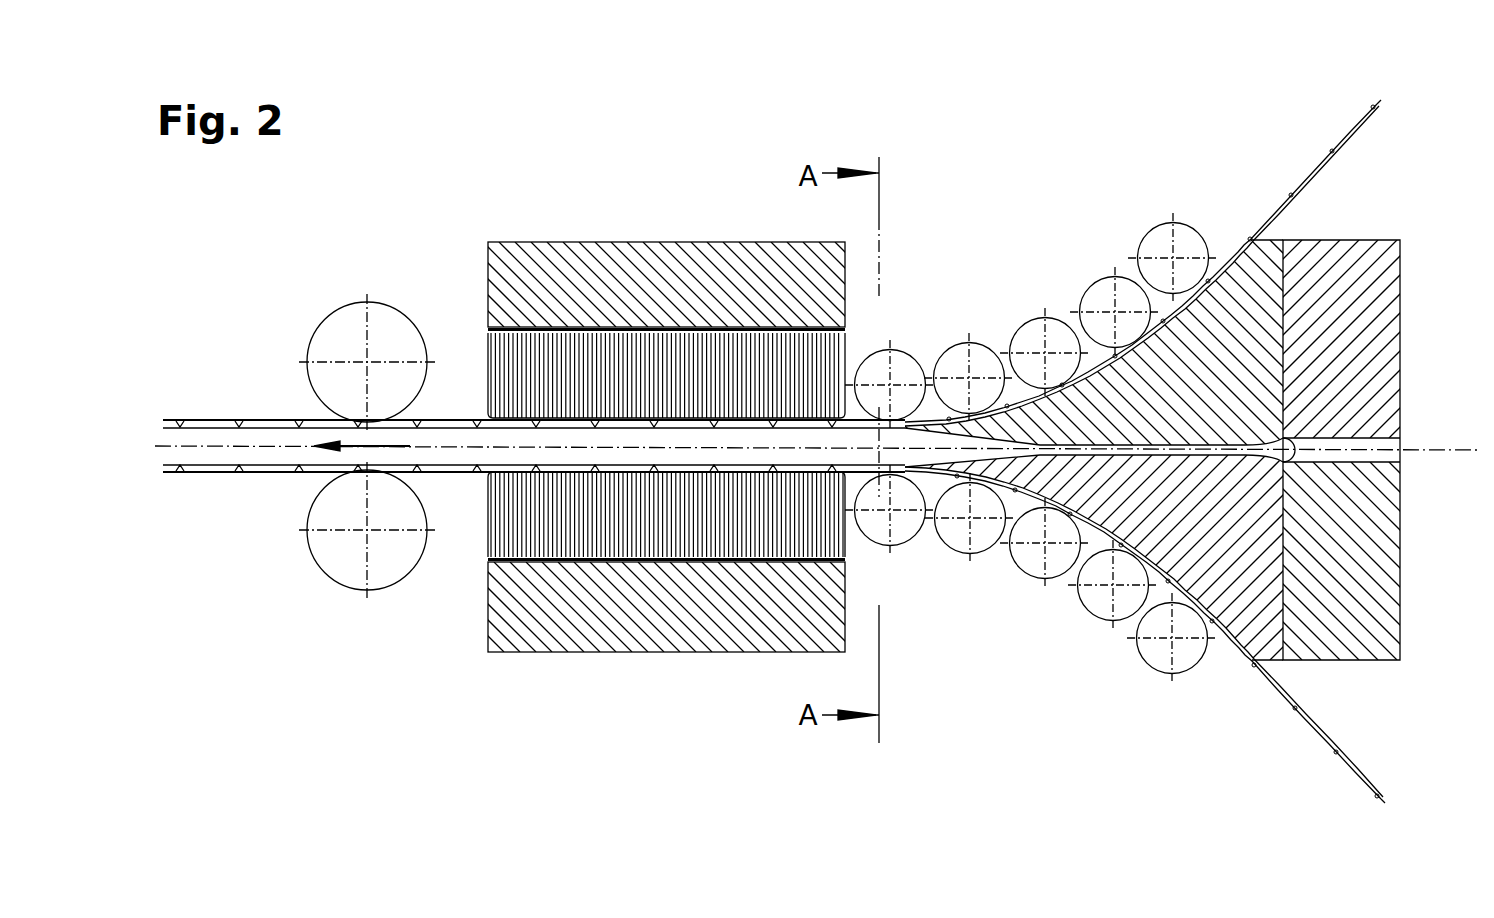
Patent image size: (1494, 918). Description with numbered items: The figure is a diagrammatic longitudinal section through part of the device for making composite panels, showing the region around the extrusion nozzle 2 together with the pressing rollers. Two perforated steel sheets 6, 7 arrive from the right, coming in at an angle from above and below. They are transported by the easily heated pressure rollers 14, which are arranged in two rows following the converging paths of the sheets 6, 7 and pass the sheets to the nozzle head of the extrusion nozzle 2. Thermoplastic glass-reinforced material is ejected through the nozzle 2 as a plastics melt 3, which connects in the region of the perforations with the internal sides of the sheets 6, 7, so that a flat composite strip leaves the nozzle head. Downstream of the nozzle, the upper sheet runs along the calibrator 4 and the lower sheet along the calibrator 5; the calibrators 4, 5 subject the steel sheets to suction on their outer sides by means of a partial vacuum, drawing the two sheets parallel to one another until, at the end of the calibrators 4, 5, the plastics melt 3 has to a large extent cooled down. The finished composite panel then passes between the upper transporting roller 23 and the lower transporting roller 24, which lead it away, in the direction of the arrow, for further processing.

The extrusion nozzle 2 is at (904, 472).
The plastics melt 3 is at (1400, 445).
The calibrator 4 is at (551, 262).
The calibrator 5 is at (563, 628).
The sheet 6 is at (1318, 169).
The sheet 7 is at (1312, 721).
The pressure roller 14 is at (978, 354).
The transporting roller 23 is at (388, 304).
The transporting roller 24 is at (398, 578).